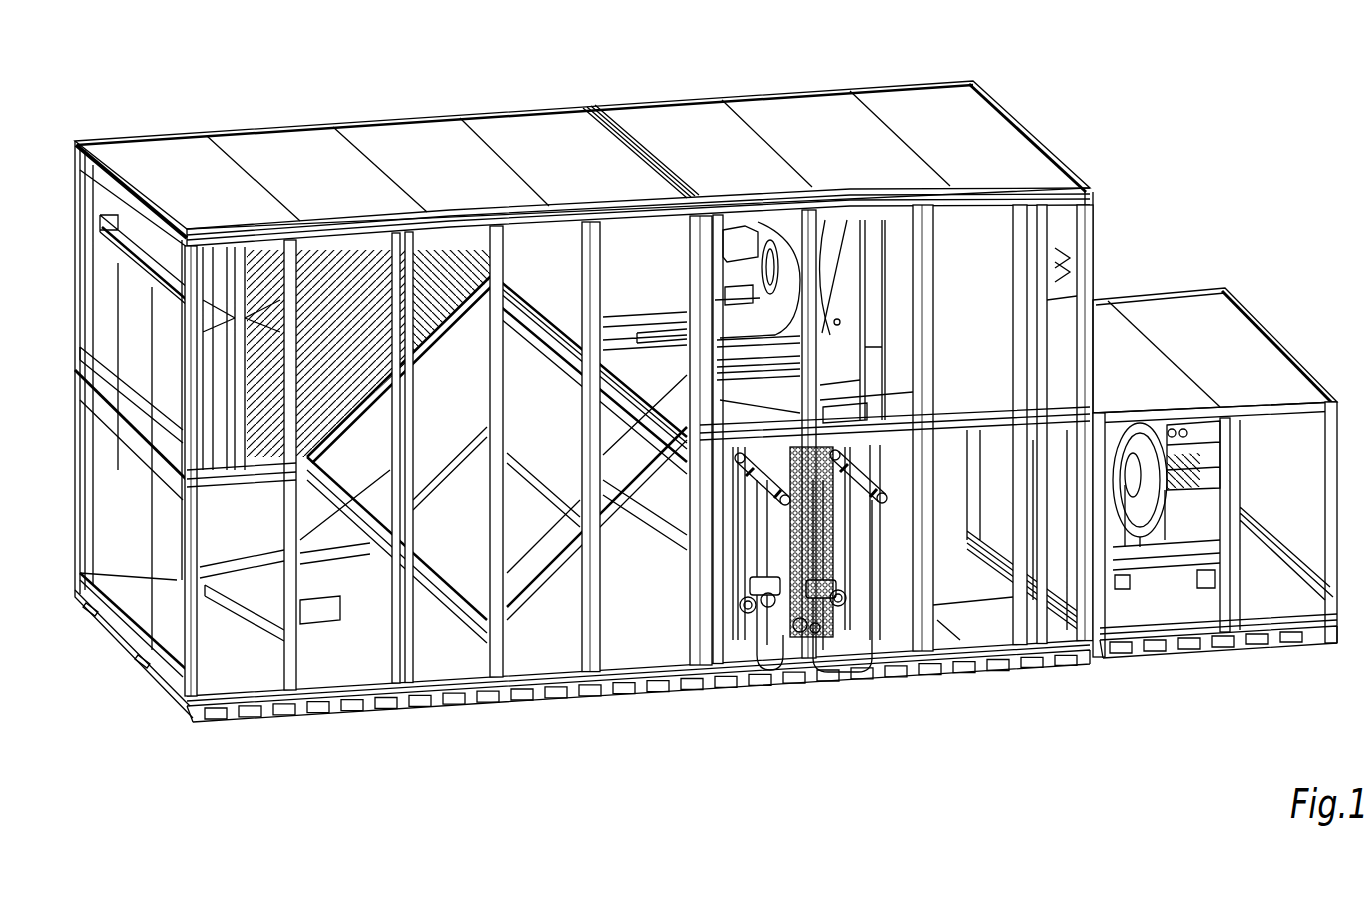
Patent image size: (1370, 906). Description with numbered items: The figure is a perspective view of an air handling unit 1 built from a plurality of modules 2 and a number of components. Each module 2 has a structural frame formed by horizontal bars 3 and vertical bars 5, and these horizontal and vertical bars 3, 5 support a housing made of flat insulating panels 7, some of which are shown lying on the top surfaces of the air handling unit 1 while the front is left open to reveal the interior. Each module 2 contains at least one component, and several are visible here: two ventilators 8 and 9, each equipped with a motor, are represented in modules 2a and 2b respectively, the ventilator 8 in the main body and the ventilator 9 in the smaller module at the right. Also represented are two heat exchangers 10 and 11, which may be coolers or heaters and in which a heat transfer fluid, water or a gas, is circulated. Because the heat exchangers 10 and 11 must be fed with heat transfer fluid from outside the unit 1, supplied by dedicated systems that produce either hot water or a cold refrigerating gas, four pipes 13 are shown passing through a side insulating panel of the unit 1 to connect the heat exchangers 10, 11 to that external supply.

The air handling unit 1 is at (1143, 190).
The module 2 is at (229, 663).
The module 2a is at (955, 22).
The module 2b is at (1360, 697).
The horizontal bars 3 is at (432, 226).
The vertical bars 5 is at (497, 630).
The flat insulating panels 7 is at (297, 160).
The ventilator 8 is at (740, 270).
The ventilator 9 is at (1212, 460).
The heat exchanger 10 is at (738, 545).
The heat exchanger 11 is at (830, 543).
The pipes 13 is at (745, 460).